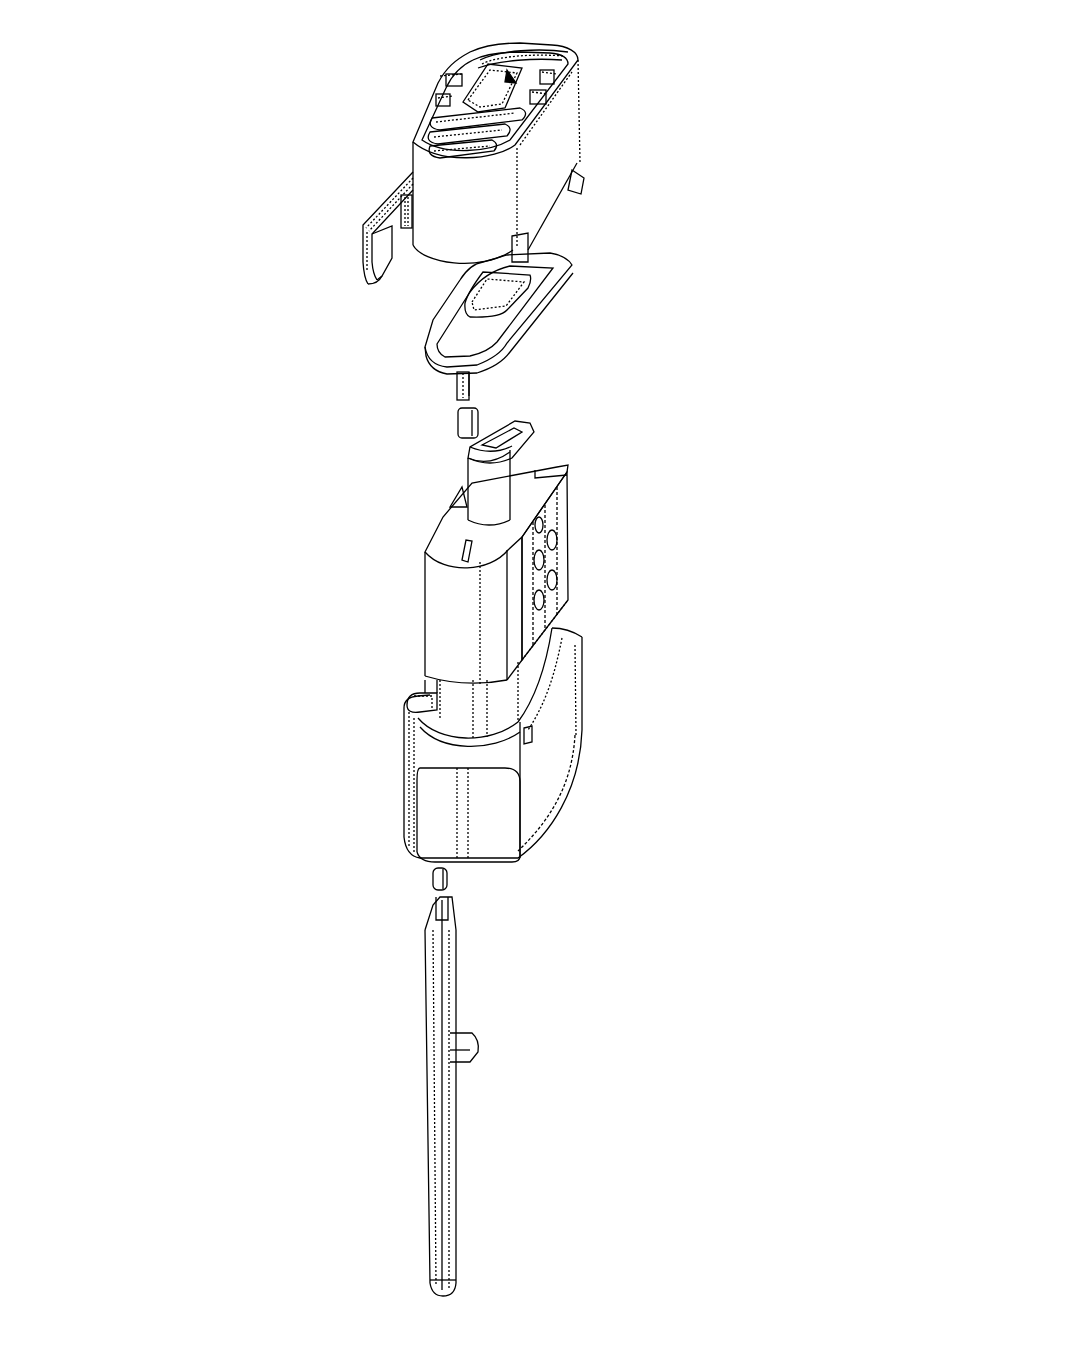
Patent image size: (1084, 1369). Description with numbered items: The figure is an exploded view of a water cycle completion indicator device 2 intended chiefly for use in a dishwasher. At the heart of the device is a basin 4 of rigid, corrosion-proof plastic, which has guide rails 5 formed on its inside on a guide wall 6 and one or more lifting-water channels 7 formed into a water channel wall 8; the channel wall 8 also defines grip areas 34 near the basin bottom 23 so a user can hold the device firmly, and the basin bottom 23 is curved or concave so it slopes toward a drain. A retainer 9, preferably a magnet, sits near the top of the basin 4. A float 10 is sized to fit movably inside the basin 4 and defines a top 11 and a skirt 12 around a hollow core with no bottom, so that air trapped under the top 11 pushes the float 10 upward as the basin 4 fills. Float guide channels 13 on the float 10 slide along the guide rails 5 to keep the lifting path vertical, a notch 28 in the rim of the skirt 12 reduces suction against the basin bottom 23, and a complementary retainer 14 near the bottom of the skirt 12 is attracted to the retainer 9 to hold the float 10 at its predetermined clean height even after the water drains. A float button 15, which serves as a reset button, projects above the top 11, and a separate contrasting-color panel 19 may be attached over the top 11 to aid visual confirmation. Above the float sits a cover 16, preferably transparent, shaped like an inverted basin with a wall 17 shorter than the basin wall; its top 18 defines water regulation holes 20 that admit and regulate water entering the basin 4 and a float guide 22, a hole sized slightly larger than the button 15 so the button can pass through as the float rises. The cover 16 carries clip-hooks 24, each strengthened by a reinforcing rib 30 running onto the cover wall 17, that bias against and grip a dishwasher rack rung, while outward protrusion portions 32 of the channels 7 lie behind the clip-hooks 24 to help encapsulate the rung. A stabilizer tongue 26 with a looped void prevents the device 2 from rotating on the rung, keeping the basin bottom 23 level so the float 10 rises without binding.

The water cycle completion indicator device 2 is at (680, 863).
The basin 4 is at (590, 728).
The guide rails 5 is at (568, 647).
The guide wall 6 is at (552, 632).
The lifting-water channels 7 is at (407, 705).
The water channel wall 8 is at (405, 773).
The retainer 9 is at (430, 880).
The float 10 is at (420, 597).
The top 11 is at (440, 538).
The skirt 12 is at (435, 632).
The float guide channels 13 is at (527, 625).
The complementary retainer 14 is at (455, 421).
The float button 15 is at (470, 470).
The cover 16 is at (588, 101).
The wall 17 is at (565, 137).
The top 18 is at (565, 48).
The panel 19 is at (565, 283).
The water regulation holes 20 is at (427, 147).
The float guide 22 is at (580, 57).
The basin bottom 23 is at (489, 864).
The clip-hooks 24 is at (360, 238).
The stabilizer tongue 26 is at (425, 1065).
The notch 28 is at (553, 617).
The reinforcing rib 30 is at (400, 185).
The outward protrusion portions 32 is at (400, 723).
The grip areas 34 is at (433, 832).